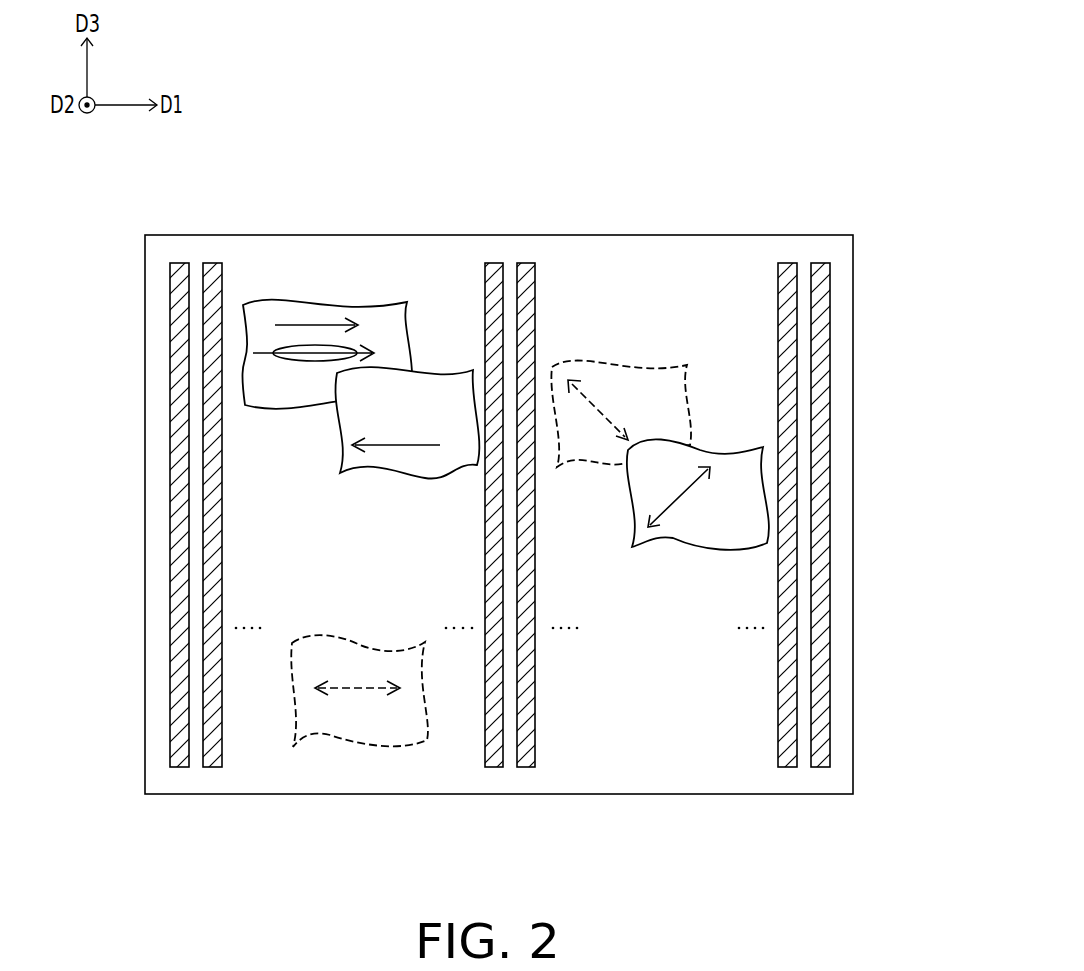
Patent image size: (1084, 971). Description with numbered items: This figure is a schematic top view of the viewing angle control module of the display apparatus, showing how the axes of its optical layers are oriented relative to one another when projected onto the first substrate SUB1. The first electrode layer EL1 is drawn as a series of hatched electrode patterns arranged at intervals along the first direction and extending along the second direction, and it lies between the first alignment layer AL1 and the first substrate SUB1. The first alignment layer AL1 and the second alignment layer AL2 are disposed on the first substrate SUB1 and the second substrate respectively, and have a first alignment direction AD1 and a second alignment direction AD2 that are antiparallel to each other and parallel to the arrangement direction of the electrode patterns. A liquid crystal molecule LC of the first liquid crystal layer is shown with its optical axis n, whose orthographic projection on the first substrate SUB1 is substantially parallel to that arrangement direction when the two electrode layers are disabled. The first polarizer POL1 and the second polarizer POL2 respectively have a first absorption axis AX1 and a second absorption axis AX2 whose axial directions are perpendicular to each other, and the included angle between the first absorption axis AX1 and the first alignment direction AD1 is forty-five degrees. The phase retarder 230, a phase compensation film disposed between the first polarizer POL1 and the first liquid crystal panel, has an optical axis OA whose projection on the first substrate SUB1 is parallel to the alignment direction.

The first substrate SUB1 is at (777, 252).
The first electrode layer EL1 is at (877, 2).
The first alignment direction AD1 is at (312, 312).
The second alignment direction AD2 is at (417, 443).
The first alignment layer AL1 is at (373, 306).
The second alignment layer AL2 is at (457, 370).
The liquid crystal molecule LC is at (315, 362).
The optical axis n is at (262, 352).
The first polarizer POL1 is at (667, 367).
The second polarizer POL2 is at (732, 455).
The first absorption axis AX1 is at (602, 405).
The second absorption axis AX2 is at (682, 498).
The phase retarder 230 is at (388, 750).
The optical axis OA is at (357, 692).